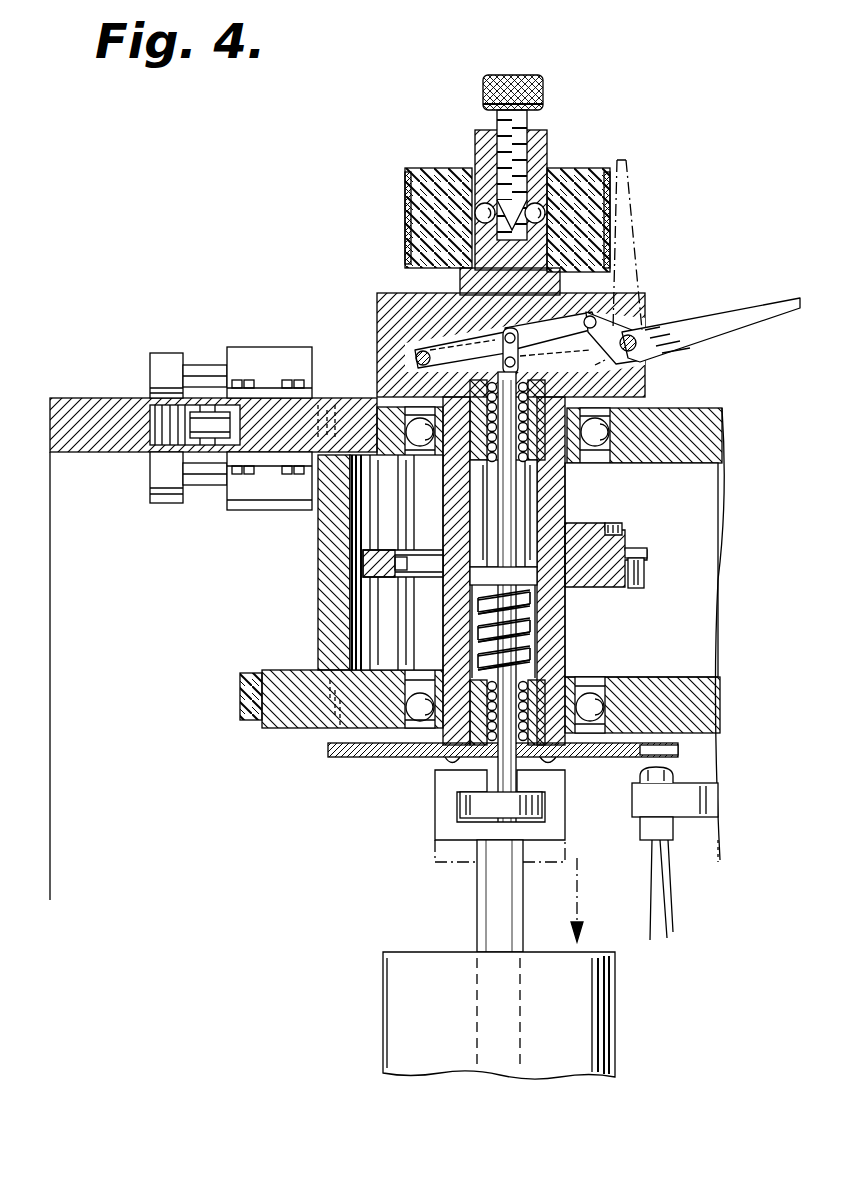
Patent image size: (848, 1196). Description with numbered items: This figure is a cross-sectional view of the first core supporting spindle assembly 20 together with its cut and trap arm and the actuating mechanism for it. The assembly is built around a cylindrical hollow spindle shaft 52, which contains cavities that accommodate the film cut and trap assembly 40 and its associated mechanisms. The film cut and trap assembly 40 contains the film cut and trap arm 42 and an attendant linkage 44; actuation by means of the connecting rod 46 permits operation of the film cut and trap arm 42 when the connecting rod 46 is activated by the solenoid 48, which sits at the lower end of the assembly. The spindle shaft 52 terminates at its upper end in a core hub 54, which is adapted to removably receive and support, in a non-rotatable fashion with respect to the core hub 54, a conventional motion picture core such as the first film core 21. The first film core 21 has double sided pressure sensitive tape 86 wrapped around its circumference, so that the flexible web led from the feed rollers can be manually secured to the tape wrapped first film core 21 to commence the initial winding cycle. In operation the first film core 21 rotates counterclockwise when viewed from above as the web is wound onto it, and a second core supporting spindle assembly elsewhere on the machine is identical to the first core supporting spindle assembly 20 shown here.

The first core supporting spindle assembly 20 is at (373, 268).
The first film core 21 is at (588, 217).
The film cut and trap assembly 40 is at (622, 470).
The film cut and trap arm 42 is at (740, 220).
The attendant linkage 44 is at (458, 455).
The connecting rod 46 is at (500, 545).
The solenoid 48 is at (410, 1020).
The cylindrical hollow spindle shaft 52 is at (542, 632).
The core hub 54 is at (547, 140).
The double sided pressure sensitive tape 86 is at (405, 195).